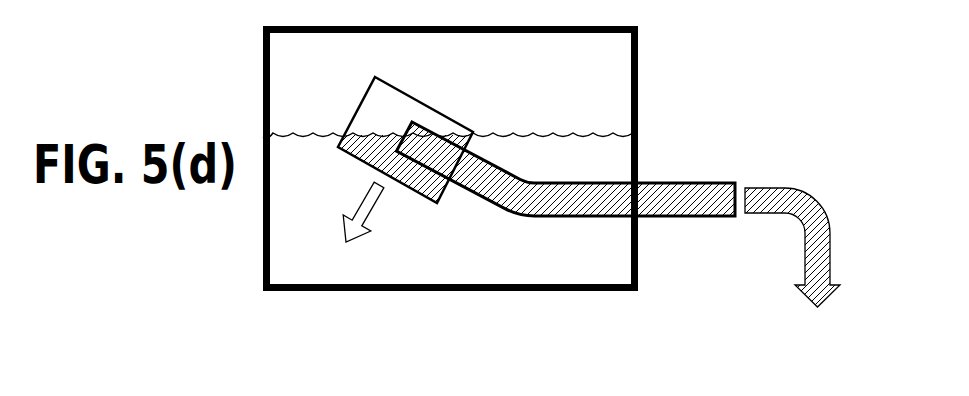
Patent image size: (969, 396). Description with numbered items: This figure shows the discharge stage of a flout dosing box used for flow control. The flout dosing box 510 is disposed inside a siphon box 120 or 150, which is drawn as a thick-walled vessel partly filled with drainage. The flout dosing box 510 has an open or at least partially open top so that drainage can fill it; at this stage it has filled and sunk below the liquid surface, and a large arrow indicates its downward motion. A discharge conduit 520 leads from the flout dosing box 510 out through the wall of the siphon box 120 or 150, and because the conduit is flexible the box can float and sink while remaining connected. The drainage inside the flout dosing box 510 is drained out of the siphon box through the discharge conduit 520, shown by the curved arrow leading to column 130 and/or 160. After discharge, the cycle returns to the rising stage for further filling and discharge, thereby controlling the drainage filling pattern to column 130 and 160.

The siphon box 120 is at (374, 159).
The siphon box 150 is at (263, 95).
The flout dosing box 510 is at (426, 100).
The discharge conduit 520 is at (681, 182).
The column 130 is at (804, 202).
The column 160 is at (810, 188).